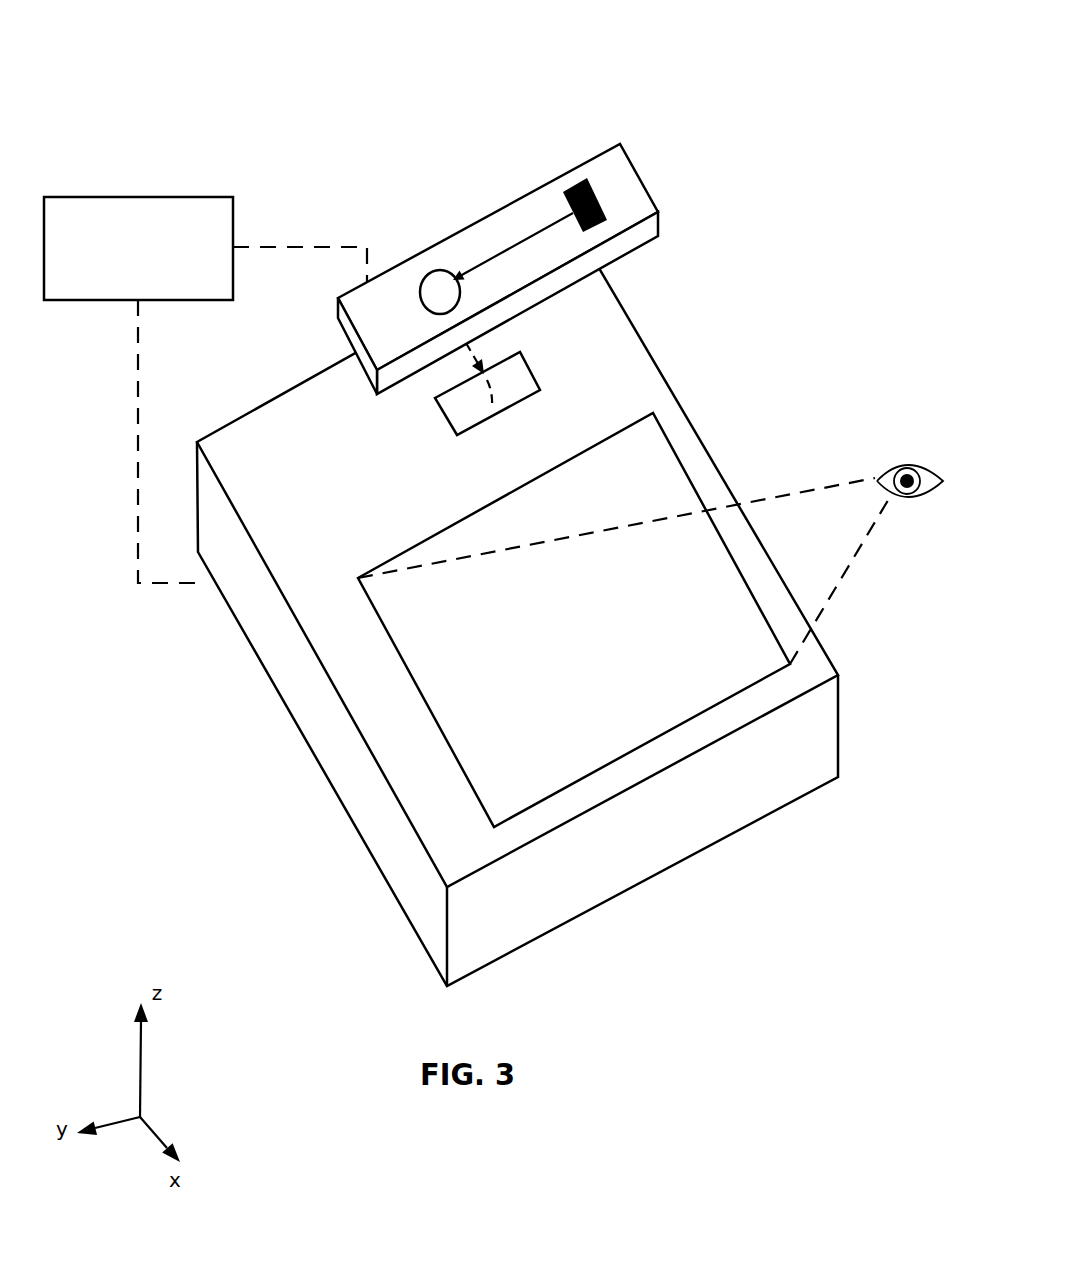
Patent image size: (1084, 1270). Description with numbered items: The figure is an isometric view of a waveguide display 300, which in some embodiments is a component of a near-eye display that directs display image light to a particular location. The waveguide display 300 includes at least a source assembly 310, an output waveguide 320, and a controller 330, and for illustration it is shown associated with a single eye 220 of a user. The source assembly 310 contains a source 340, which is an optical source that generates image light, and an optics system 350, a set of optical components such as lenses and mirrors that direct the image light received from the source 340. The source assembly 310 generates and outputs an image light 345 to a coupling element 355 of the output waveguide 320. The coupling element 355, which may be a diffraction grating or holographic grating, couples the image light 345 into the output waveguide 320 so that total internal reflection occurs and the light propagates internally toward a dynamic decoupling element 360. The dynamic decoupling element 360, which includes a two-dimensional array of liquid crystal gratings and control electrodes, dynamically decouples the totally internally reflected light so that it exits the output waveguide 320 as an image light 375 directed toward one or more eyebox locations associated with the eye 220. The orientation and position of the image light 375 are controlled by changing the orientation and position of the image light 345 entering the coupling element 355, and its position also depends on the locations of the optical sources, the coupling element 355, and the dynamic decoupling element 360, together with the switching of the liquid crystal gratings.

The waveguide display 300 is at (88, 38).
The source assembly 310 is at (595, 213).
The output waveguide 320 is at (368, 743).
The controller 330 is at (120, 274).
The source 340 is at (577, 180).
The image light 345 is at (492, 380).
The optics system 350 is at (413, 211).
The coupling element 355 is at (542, 390).
The dynamic decoupling element 360 is at (483, 806).
The image light 375 is at (852, 557).
The eye 220 is at (887, 452).